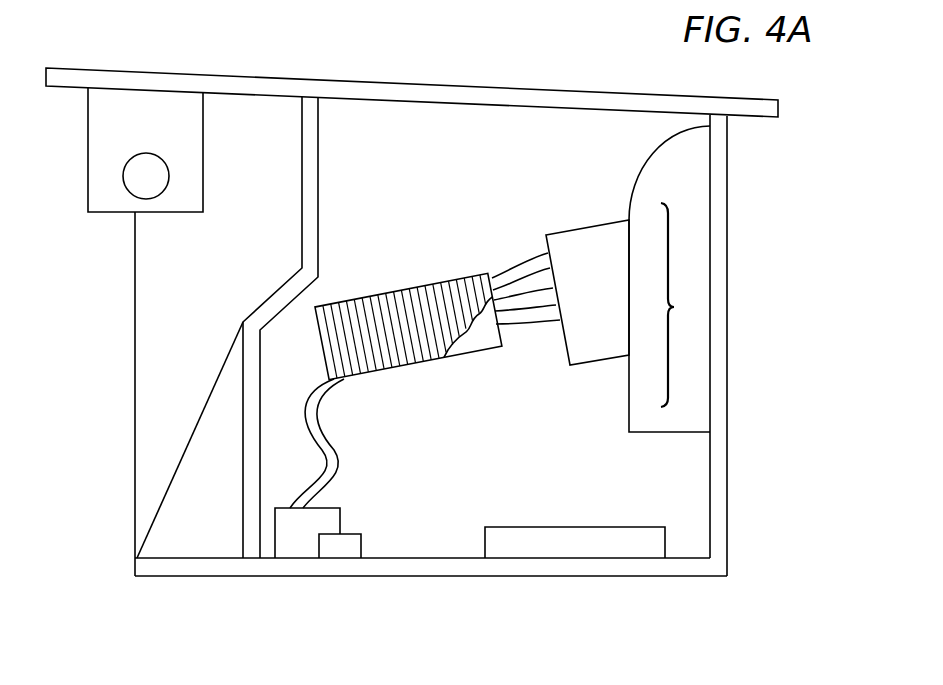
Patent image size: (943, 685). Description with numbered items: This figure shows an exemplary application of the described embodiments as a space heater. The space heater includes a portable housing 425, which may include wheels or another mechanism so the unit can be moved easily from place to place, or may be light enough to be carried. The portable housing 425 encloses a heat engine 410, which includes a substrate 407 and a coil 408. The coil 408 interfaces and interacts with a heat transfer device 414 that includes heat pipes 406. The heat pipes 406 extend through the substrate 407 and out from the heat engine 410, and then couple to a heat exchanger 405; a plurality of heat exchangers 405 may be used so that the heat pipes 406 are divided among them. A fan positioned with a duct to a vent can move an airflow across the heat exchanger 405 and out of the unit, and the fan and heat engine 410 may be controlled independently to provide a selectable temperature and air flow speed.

The portable housing 425 is at (479, 87).
The heat engine 410 is at (493, 218).
The heat transfer device 414 is at (674, 307).
The heat exchanger 405 is at (587, 355).
The heat pipes 406 is at (522, 318).
The substrate 407 is at (470, 340).
The coil 408 is at (377, 373).